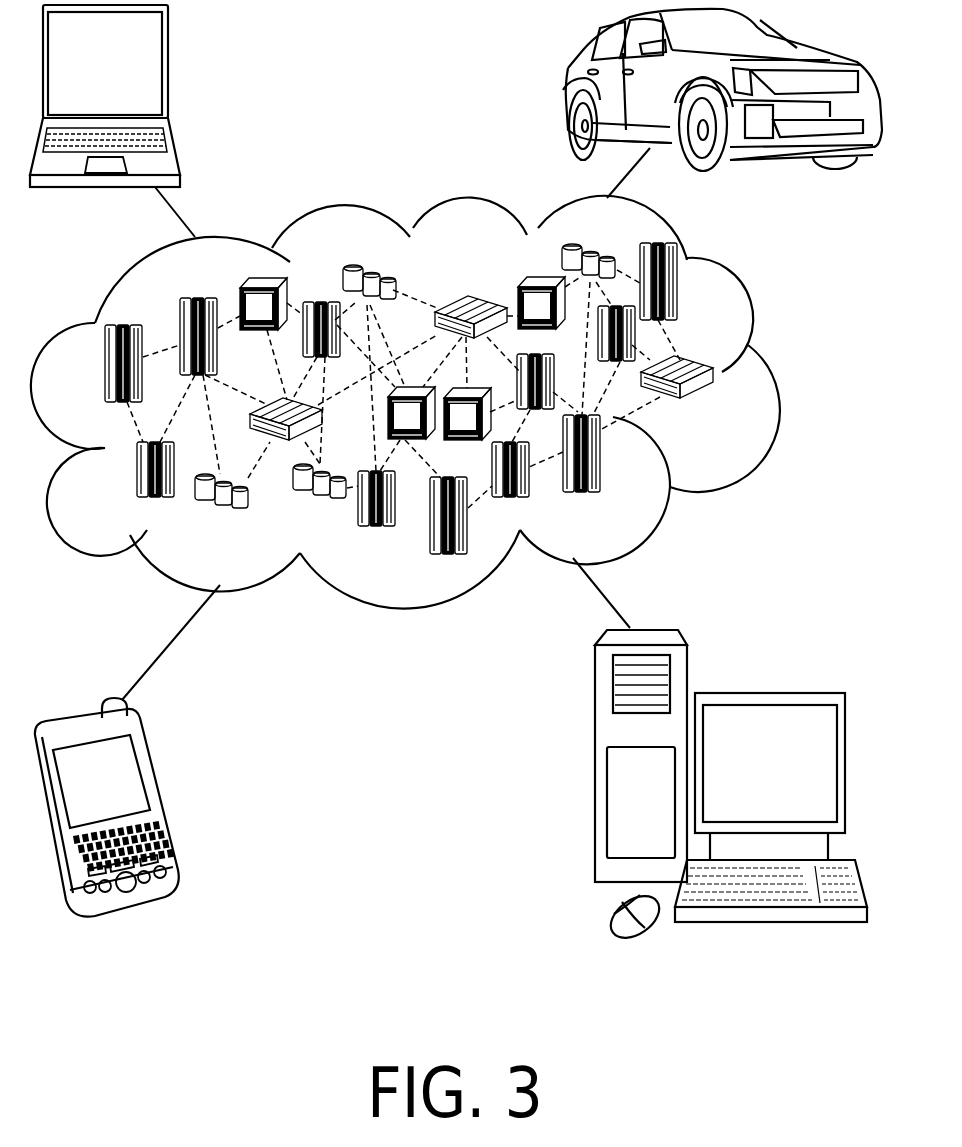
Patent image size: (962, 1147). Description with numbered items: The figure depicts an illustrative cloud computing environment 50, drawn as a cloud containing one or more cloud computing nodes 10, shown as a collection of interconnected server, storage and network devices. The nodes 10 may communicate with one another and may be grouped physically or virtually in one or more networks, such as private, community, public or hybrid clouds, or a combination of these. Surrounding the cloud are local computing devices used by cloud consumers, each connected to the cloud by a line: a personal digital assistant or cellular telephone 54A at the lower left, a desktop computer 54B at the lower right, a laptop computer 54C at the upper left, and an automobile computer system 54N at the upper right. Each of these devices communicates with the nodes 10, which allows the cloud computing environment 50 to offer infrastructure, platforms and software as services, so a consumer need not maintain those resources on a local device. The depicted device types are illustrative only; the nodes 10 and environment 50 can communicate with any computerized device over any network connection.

The cloud computing nodes 10 is at (719, 410).
The cloud computing environment 50 is at (768, 375).
The personal digital assistant (PDA) or cellular telephone 54A is at (158, 797).
The desktop computer 54B is at (767, 693).
The laptop computer 54C is at (168, 72).
The automobile computer system 54N is at (566, 90).